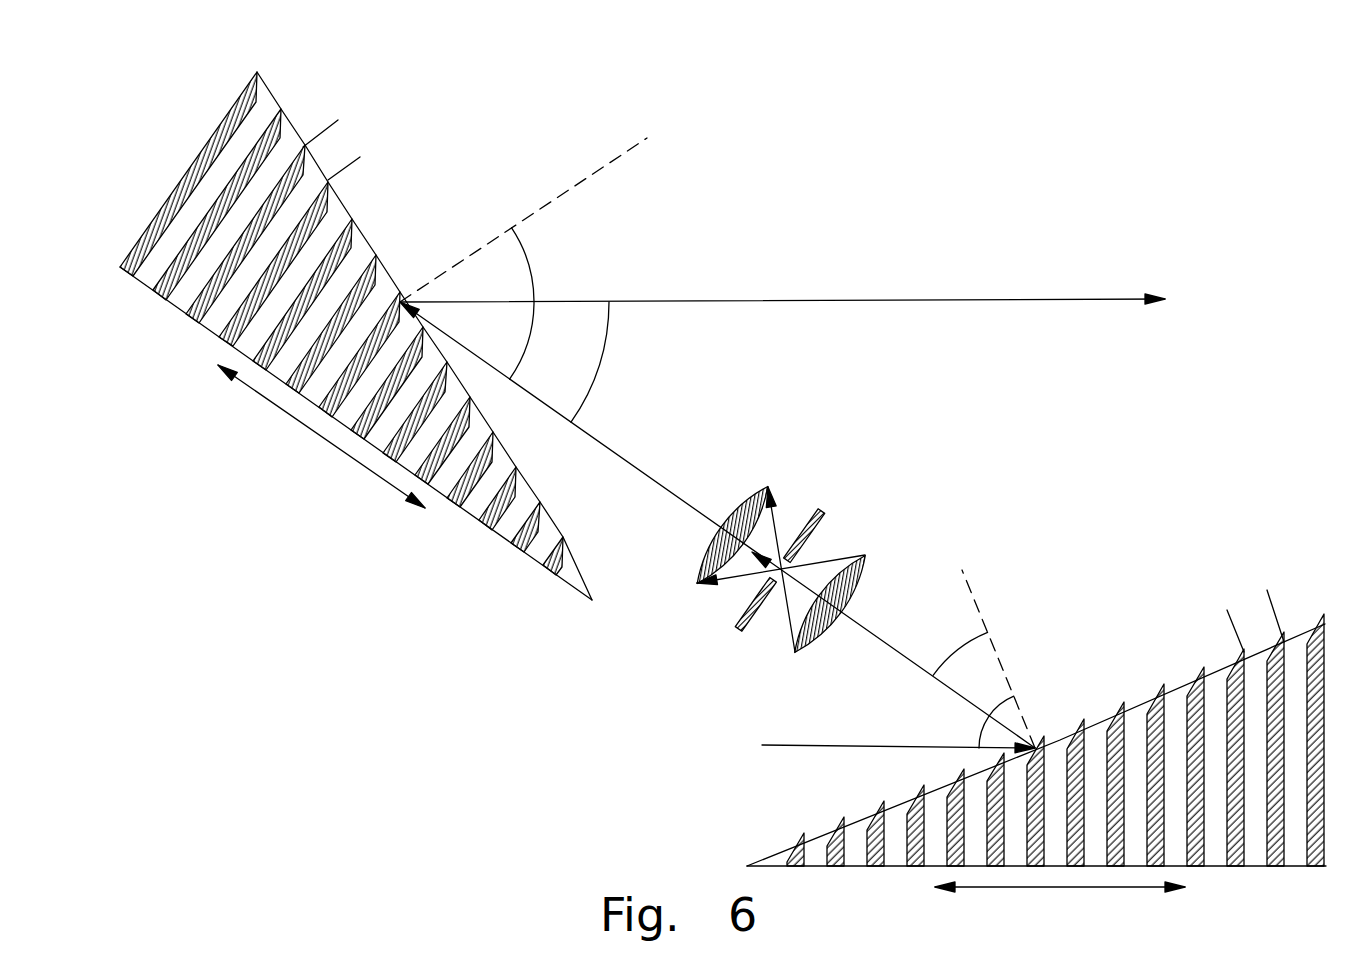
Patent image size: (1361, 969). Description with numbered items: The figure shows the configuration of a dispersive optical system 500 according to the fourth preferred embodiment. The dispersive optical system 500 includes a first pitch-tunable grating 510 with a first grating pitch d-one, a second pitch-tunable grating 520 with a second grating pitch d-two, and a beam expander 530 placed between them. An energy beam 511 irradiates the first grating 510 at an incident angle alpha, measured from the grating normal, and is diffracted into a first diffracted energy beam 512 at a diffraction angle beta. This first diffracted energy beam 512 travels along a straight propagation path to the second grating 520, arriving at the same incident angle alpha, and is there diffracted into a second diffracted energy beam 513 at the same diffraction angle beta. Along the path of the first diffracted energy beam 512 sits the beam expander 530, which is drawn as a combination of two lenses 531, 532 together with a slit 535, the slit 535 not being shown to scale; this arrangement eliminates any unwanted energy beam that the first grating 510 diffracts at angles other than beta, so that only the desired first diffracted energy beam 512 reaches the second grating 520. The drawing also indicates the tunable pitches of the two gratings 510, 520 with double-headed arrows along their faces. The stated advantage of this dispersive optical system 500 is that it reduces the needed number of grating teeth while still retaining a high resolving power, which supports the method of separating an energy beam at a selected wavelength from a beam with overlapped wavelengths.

The dispersive optical system 500 is at (1256, 127).
The first pitch-tunable grating 510 is at (1311, 914).
The energy beam 511 is at (807, 745).
The first diffracted energy beam 512 is at (612, 450).
The second diffracted energy beam 513 is at (838, 299).
The second pitch-tunable grating 520 is at (133, 168).
The beam expander 530 is at (793, 398).
The lens 531 is at (752, 487).
The lens 532 is at (860, 555).
The slit 535 is at (818, 510).